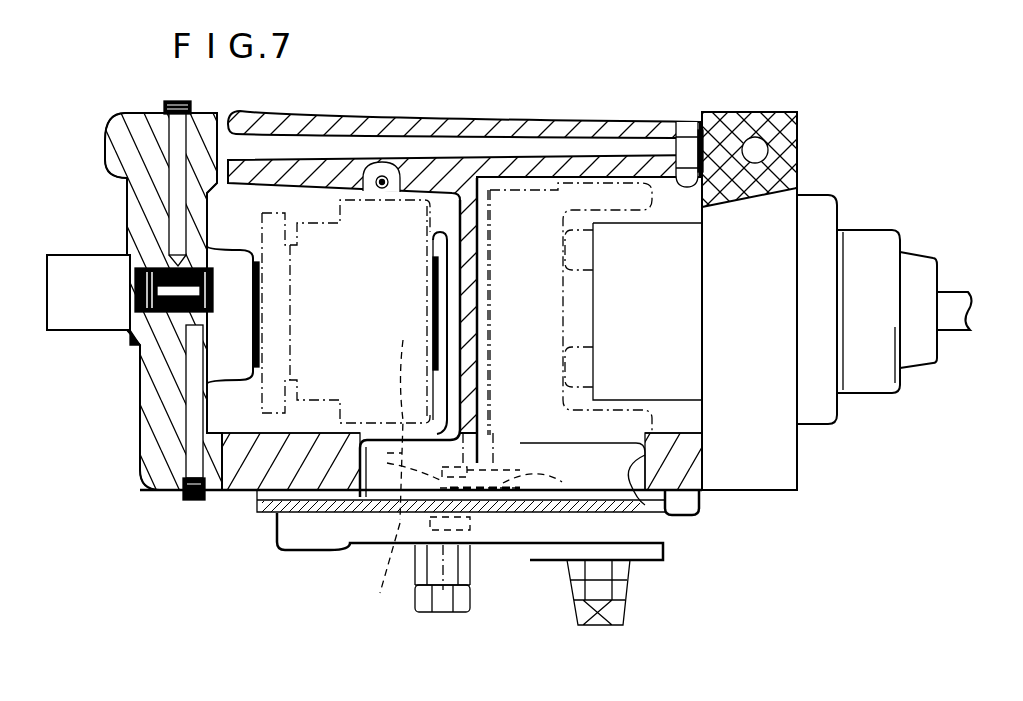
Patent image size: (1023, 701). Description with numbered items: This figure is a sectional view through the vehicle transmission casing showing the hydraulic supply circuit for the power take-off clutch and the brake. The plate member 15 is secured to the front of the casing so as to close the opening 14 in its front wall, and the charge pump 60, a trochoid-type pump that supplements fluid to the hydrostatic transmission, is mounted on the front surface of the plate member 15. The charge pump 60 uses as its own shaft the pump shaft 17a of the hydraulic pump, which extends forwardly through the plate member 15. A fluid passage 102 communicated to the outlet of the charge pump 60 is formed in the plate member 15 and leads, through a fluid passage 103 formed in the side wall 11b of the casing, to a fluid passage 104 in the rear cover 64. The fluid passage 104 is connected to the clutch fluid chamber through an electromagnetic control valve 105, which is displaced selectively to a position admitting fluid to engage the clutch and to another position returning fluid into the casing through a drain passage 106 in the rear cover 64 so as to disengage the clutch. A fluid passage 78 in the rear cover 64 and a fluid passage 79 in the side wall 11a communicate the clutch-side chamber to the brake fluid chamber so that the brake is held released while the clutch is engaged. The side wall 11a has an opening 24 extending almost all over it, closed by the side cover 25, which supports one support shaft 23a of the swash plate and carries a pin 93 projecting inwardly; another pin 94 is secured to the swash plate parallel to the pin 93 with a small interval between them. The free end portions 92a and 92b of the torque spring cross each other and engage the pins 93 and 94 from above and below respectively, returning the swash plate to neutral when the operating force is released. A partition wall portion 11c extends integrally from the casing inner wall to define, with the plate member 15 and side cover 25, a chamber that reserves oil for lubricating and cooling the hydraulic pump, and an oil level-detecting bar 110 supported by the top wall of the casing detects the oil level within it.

The fluid passage 103 is at (372, 140).
The oil level-detecting bar 110 is at (386, 177).
The side wall 11b is at (593, 126).
The opening 14 is at (674, 125).
The fluid passage 102 is at (740, 135).
The charge pump 60 is at (882, 248).
The pump shaft 17a is at (955, 330).
The plate member 15 is at (772, 464).
The opening 24 is at (676, 513).
The support shaft 23a is at (632, 570).
The pin 93 is at (485, 545).
The pin 94 is at (500, 513).
The free end portion 92b is at (369, 573).
The free end portion 92a is at (409, 376).
The side cover 25 is at (342, 515).
The side wall 11a is at (280, 462).
The fluid passage 78 is at (210, 497).
The rear cover 64 is at (160, 391).
The electromagnetic control valve 105 is at (152, 318).
The drain passage 106 is at (217, 289).
The fluid passage 104 is at (173, 205).
The fluid passage 79 is at (248, 440).
The partition wall portion 11c is at (478, 320).